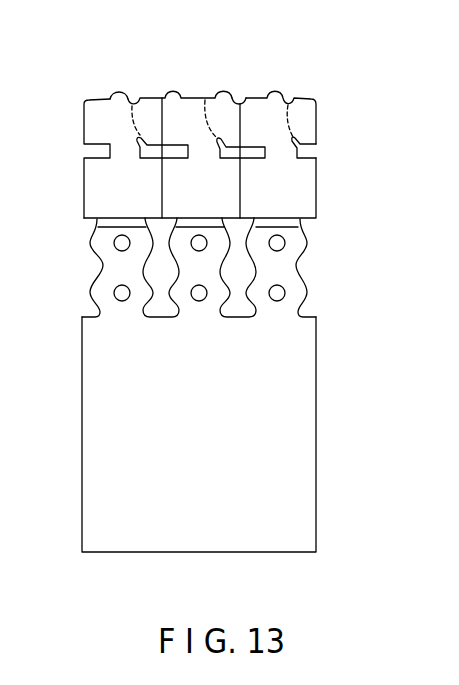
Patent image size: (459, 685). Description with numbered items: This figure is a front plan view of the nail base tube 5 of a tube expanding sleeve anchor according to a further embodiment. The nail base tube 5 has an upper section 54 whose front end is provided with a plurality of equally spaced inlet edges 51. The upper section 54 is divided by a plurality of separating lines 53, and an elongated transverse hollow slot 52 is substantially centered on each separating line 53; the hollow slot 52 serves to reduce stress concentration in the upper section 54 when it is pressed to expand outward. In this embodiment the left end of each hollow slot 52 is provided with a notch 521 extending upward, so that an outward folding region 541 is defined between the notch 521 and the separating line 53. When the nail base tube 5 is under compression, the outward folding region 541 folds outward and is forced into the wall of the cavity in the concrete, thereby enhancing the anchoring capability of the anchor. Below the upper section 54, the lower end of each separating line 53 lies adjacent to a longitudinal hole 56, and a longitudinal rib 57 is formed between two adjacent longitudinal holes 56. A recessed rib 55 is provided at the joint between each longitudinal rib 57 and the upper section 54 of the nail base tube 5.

The nail base tube 5 is at (323, 448).
The inlet edge 51 is at (120, 92).
The hollow slot 52 is at (250, 148).
The notch 521 is at (240, 147).
The separating line 53 is at (160, 140).
The upper section 54 is at (78, 100).
The outward folding region 541 is at (303, 125).
The recessed rib 55 is at (302, 226).
The longitudinal hole 56 is at (238, 310).
The longitudinal rib 57 is at (277, 268).